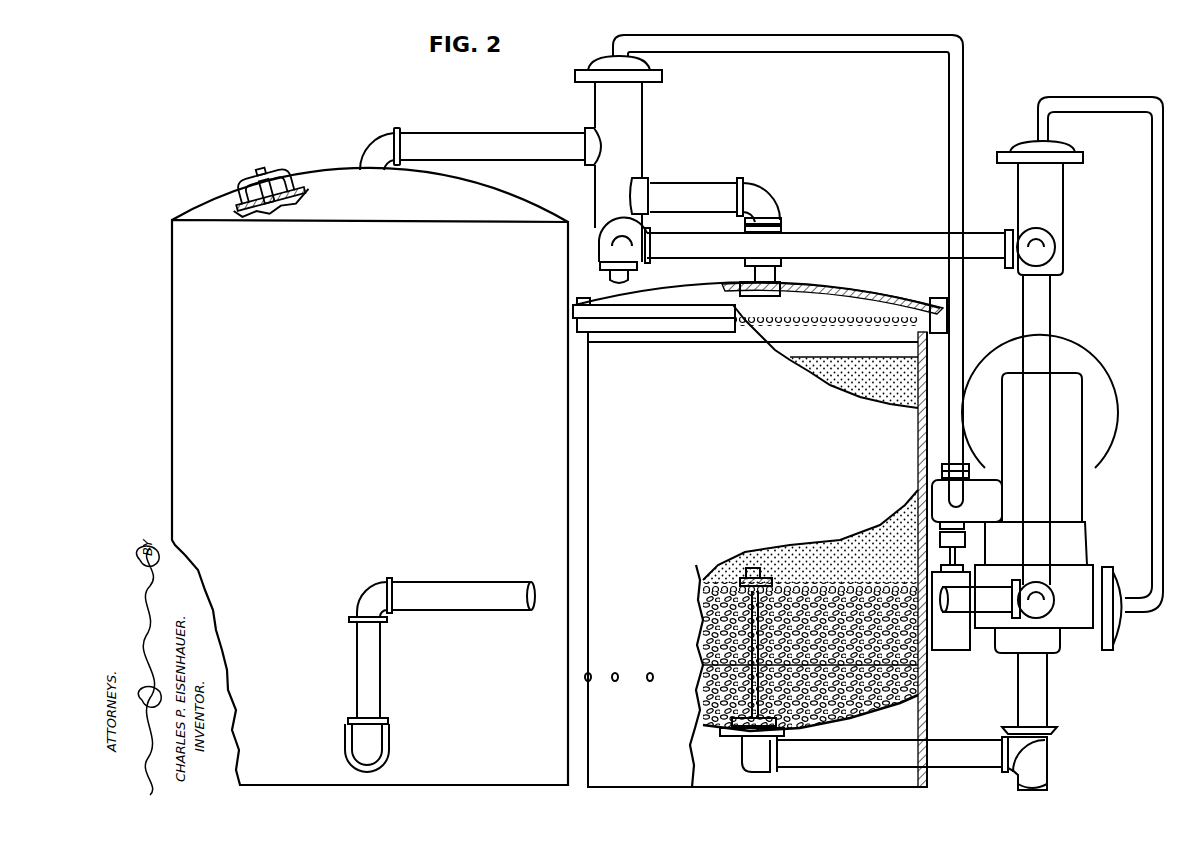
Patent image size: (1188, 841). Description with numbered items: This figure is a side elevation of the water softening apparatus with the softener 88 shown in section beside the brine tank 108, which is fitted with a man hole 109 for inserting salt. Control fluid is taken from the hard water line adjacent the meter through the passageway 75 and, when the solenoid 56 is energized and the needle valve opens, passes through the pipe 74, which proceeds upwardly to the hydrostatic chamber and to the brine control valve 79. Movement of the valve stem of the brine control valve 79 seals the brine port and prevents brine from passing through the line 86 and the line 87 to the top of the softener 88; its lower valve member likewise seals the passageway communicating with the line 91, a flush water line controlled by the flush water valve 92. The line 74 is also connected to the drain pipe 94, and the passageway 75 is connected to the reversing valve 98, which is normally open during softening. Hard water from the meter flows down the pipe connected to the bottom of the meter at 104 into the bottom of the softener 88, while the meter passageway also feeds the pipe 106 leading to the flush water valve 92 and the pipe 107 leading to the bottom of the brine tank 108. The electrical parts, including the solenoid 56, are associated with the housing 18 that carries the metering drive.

The housing or casing 18 is at (1075, 400).
The solenoid 56 is at (947, 652).
The pipe 74 is at (963, 191).
The passageway 75 is at (1151, 530).
The brine control valve 79 is at (642, 113).
The brine line 86 is at (507, 140).
The brine line 87 is at (694, 188).
The softener 88 is at (683, 300).
The flush water line 91 is at (849, 247).
The flush water valve 92 is at (1063, 197).
The drain pipe 94 is at (1040, 762).
The reversing valve 98 is at (1113, 646).
The pipe connection at bottom of meter 104 is at (1047, 704).
The pipe 106 is at (1050, 305).
The pipe 107 is at (447, 585).
The brine tank 108 is at (172, 342).
The man hole 109 is at (238, 190).